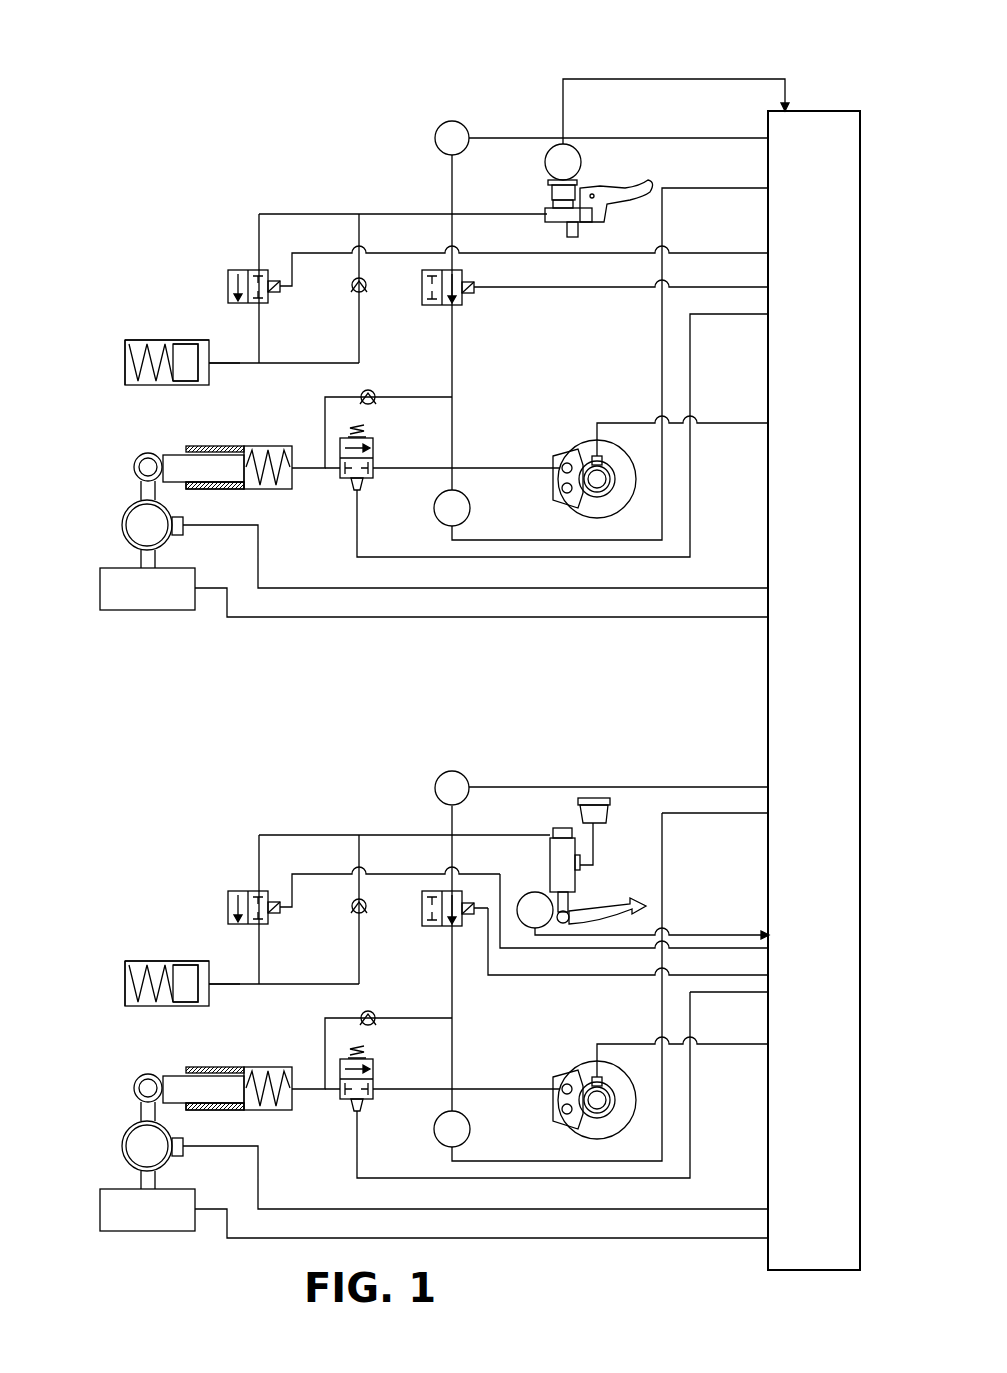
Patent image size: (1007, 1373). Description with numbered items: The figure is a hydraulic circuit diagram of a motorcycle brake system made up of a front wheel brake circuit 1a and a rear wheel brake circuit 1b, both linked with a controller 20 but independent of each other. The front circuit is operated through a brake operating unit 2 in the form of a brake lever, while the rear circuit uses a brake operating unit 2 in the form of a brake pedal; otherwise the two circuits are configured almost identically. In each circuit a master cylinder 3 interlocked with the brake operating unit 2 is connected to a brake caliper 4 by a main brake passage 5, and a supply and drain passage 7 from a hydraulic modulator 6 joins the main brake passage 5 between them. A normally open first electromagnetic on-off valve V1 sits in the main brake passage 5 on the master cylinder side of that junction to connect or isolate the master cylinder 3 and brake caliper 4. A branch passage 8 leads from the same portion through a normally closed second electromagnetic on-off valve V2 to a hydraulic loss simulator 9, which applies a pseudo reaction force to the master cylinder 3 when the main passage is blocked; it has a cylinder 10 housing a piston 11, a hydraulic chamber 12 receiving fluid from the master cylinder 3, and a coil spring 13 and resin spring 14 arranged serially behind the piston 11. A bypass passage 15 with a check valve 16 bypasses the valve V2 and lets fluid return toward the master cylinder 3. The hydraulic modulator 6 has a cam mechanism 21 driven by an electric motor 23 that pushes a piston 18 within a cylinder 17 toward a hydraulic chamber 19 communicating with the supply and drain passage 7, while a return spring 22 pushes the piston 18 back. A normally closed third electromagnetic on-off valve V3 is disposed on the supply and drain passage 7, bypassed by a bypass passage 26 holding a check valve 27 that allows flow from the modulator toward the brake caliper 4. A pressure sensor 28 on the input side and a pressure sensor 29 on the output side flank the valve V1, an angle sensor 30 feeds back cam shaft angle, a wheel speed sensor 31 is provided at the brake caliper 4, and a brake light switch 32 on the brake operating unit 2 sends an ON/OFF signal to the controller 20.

The front wheel brake circuit 1a is at (548, 82).
The rear wheel brake circuit 1b is at (560, 760).
The brake operating unit 2 is at (617, 182).
The master cylinder 3 is at (546, 209).
The brake caliper 4 is at (559, 457).
The main brake passage 5 is at (457, 378).
The hydraulic modulator 6 is at (207, 440).
The supply and drain passage 7 is at (419, 467).
The branch passage 8 is at (315, 211).
The hydraulic loss simulator 9 is at (146, 333).
The cylinder 10 is at (190, 340).
The piston 11 is at (195, 360).
The hydraulic chamber 12 is at (208, 372).
The coil spring 13 is at (125, 358).
The resin spring 14 is at (78, 345).
The bypass passage 15 is at (293, 362).
The check valve 16 is at (350, 286).
The cylinder 17 is at (213, 490).
The piston 18 is at (186, 461).
The hydraulic chamber 19 is at (262, 451).
The controller 20 is at (833, 123).
The cam mechanism 21 is at (146, 442).
The return spring 22 is at (281, 487).
The electric motor 23 is at (121, 600).
The bypass passage 26 is at (417, 395).
The check valve 27 is at (361, 393).
The pressure sensor 28 is at (440, 122).
The pressure sensor 29 is at (471, 511).
The angle sensor 30 is at (176, 536).
The wheel speed sensor 31 is at (596, 455).
The brake light switch 32 is at (544, 157).
The first electromagnetic on-off valve V1 is at (432, 306).
The second electromagnetic on-off valve V2 is at (232, 270).
The third electromagnetic on-off valve V3 is at (373, 478).